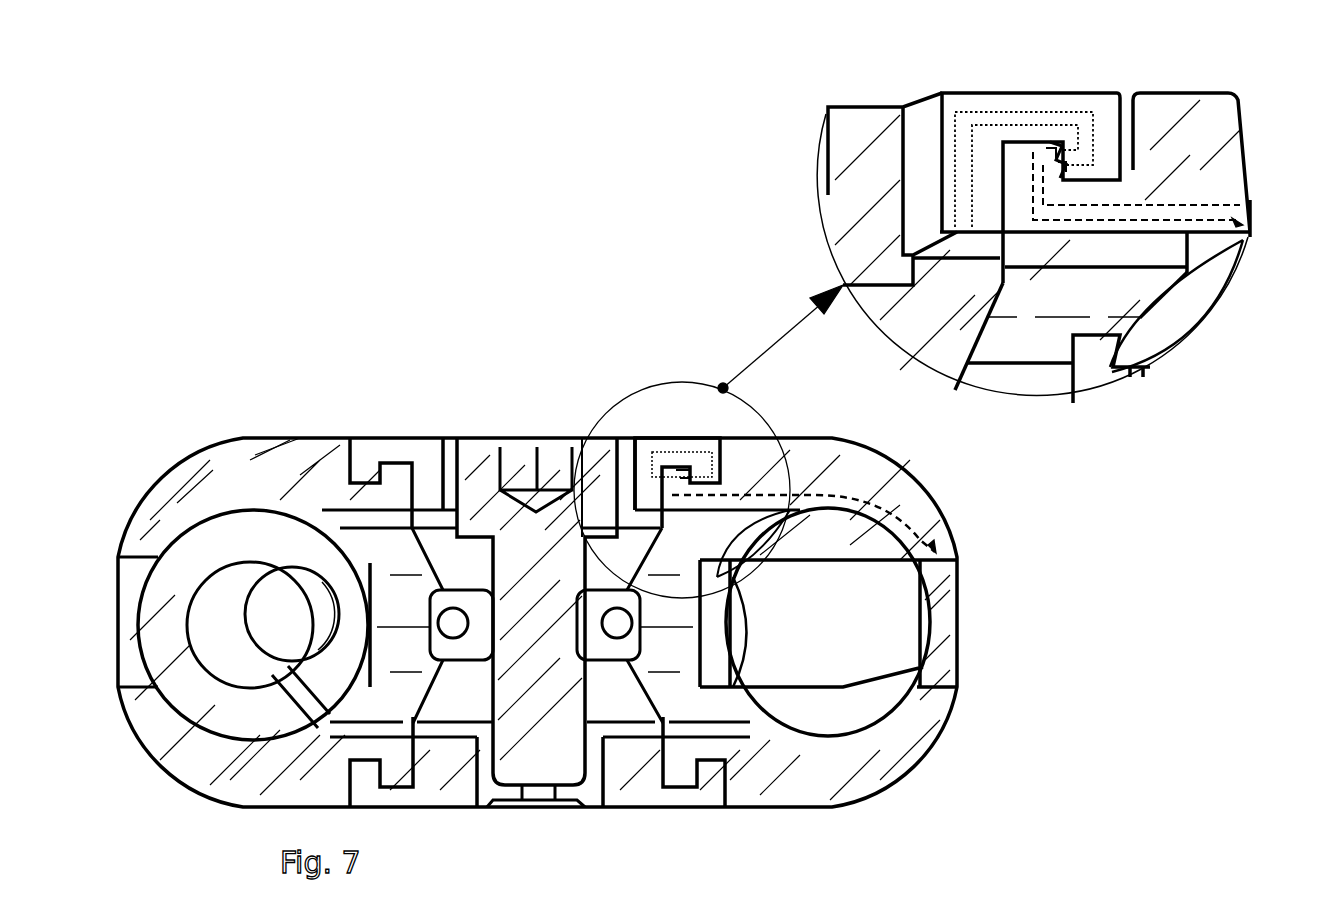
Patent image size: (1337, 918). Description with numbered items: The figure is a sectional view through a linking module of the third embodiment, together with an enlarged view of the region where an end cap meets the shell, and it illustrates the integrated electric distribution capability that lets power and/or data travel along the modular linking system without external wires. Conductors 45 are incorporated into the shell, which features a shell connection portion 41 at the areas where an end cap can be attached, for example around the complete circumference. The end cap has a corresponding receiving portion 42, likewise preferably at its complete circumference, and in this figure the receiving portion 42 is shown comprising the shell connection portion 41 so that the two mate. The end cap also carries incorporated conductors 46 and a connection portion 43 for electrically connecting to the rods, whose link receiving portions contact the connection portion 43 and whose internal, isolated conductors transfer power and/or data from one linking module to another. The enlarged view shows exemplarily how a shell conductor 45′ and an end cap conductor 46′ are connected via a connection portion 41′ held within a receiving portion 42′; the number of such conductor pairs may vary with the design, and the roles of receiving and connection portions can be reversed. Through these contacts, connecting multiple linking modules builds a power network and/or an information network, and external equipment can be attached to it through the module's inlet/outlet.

The shell connection portion 41 is at (703, 470).
The receiving portion 42 is at (683, 463).
The connection portion 43 is at (940, 550).
The conductor 45 is at (643, 468).
The conductor 46 is at (850, 492).
The connection portion 41′ is at (1058, 178).
The receiving portion 42′ is at (1050, 158).
The conductor 45′ is at (1000, 108).
The conductor 46′ is at (1180, 200).